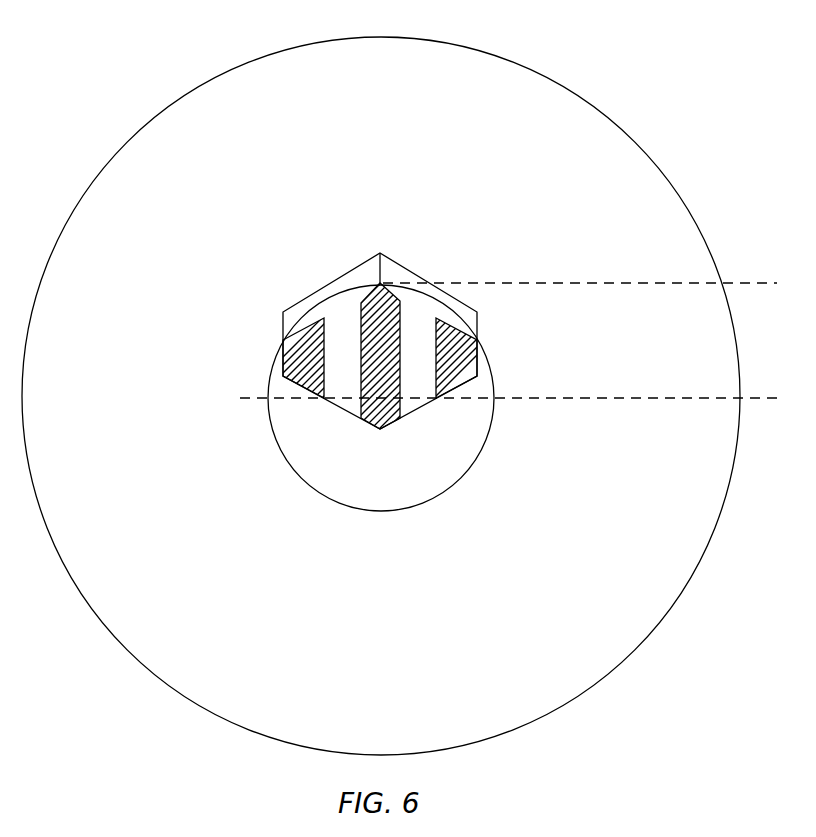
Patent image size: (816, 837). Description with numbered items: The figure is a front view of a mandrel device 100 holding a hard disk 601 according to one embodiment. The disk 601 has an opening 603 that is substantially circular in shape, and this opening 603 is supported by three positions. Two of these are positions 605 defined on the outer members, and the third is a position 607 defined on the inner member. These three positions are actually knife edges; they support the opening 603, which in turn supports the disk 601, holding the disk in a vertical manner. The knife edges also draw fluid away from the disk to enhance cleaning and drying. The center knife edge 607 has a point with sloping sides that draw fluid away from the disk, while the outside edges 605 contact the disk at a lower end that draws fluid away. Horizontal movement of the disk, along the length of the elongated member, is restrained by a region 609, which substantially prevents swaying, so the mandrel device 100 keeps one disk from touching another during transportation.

The mandrel device 100 is at (400, 384).
The disk 601 is at (642, 163).
The opening 603 is at (492, 428).
The positions 605 is at (283, 343).
The center knife edge 607 is at (380, 283).
The region 609 is at (365, 267).